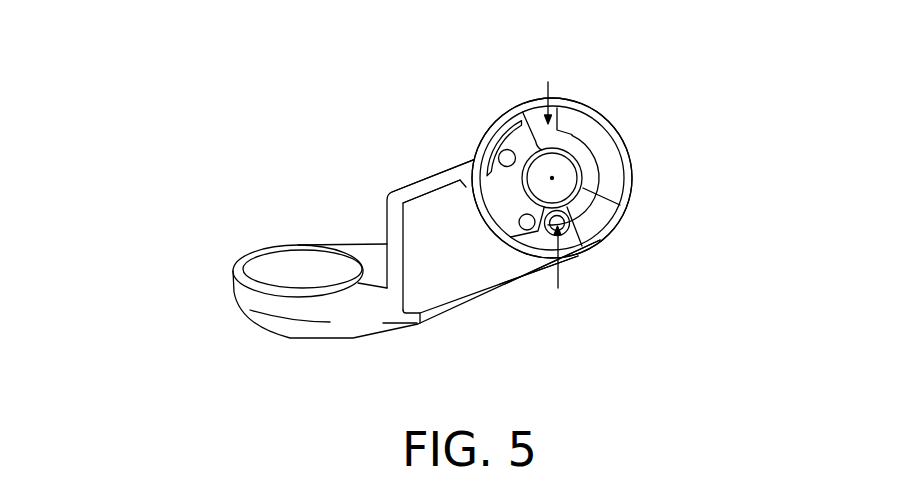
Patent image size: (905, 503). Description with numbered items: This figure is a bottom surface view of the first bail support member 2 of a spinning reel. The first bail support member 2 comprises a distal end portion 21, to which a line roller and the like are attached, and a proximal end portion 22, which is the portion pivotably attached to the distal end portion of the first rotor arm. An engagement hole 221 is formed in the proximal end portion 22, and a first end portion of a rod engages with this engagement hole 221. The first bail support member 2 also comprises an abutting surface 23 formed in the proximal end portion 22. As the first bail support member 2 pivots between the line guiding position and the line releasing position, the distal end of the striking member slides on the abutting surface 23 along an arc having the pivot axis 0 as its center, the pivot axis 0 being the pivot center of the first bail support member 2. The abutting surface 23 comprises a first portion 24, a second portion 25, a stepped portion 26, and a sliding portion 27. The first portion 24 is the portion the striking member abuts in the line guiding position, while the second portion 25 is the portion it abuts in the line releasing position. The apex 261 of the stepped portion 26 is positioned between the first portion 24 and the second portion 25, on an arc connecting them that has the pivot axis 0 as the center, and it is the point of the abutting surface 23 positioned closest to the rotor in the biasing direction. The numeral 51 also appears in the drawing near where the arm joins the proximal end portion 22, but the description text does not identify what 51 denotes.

The first bail support member 2 is at (358, 76).
The distal end portion 21 is at (260, 250).
The proximal end portion 22 is at (513, 107).
The engagement hole 221 is at (548, 240).
The abutting surface 23 is at (626, 146).
The first portion 24 is at (552, 178).
The second portion 25 is at (573, 200).
The stepped portion 26 is at (617, 210).
The apex 261 is at (583, 182).
The sliding portion 27 is at (613, 153).
The arm portion 51 is at (477, 147).
The pivot axis 0 is at (592, 138).